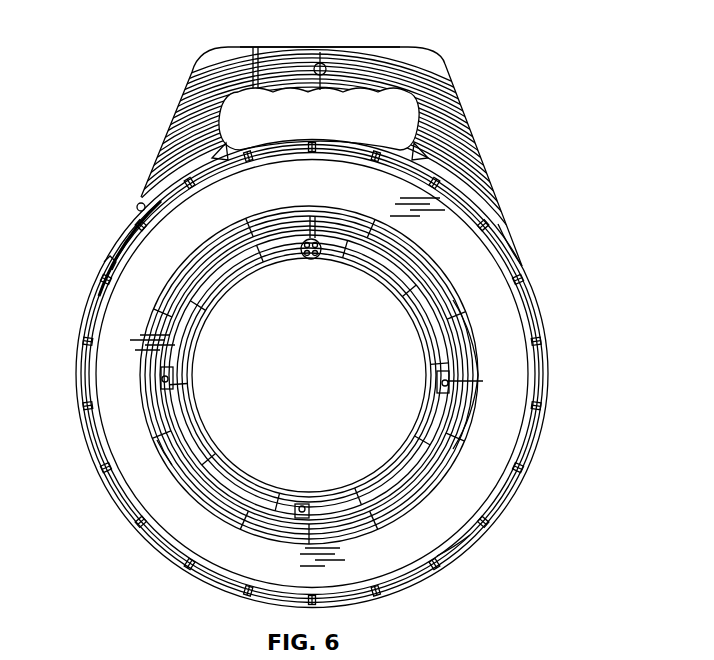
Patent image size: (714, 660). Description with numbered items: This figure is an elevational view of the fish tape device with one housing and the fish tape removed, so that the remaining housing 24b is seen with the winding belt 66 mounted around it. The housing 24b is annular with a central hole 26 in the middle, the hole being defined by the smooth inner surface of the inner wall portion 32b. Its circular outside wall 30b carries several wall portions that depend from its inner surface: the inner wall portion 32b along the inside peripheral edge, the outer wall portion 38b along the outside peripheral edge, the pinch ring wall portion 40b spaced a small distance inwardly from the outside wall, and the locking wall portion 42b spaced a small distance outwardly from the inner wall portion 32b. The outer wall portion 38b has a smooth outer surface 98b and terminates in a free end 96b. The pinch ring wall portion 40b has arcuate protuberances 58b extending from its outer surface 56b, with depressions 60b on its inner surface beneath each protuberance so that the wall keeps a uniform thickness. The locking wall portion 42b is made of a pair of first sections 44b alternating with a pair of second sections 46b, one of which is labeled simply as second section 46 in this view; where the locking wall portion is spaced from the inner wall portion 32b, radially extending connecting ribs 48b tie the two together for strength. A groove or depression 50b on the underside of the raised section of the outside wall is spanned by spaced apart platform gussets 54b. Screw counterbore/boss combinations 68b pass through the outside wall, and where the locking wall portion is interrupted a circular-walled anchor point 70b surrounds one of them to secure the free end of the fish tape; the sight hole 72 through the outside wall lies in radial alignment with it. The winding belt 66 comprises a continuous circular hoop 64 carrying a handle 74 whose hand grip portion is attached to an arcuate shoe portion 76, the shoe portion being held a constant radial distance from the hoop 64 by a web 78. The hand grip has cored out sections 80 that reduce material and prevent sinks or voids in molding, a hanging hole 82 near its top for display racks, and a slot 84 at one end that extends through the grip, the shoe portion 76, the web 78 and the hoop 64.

The housing 24b is at (501, 484).
The central hole 26 is at (323, 390).
The circular outside wall 30b is at (524, 352).
The inner wall portion 32b is at (427, 350).
The outer wall portion 38b is at (549, 388).
The pinch ring wall portion 40b is at (455, 541).
The locking wall portion 42b is at (166, 455).
The first sections 44b is at (177, 297).
The hub ring 46 is at (437, 290).
The second sections 46b is at (228, 508).
The connecting ribs 48b is at (380, 483).
The groove or depression 50b is at (148, 434).
The platform gussets 54b is at (215, 466).
The outer surface of pinch ring wall portion 56b is at (500, 510).
The protuberances 58b is at (548, 424).
The depressions 60b is at (523, 417).
The hoop 64 is at (541, 292).
The winding belt 66 is at (526, 243).
The screw counterbore/boss combinations 68b is at (177, 368).
The anchor point 70b is at (304, 259).
The lock 72 is at (332, 189).
The handle 74 is at (430, 76).
The arcuate shoe portion 76 is at (106, 258).
The web 78 is at (130, 219).
The cored out sections 80 is at (221, 64).
The hanging hole 82 is at (326, 65).
The slot 84 is at (163, 207).
The free end of outer wall portion 96b is at (547, 368).
The outer surface of outer wall portion 98b is at (544, 334).